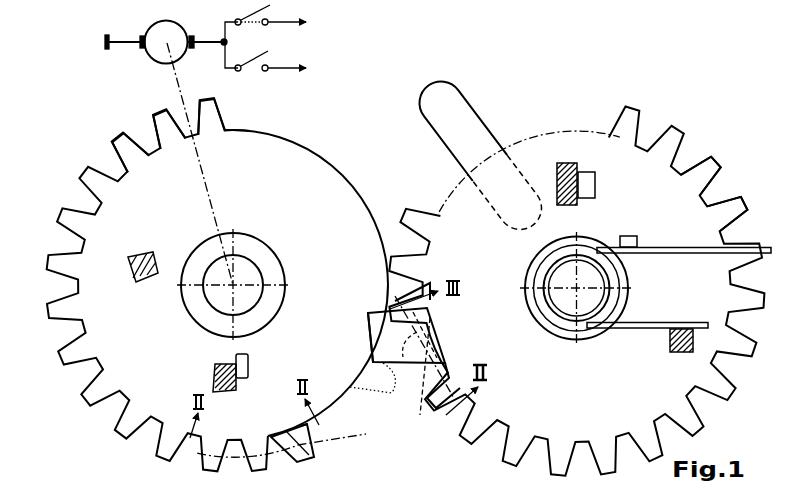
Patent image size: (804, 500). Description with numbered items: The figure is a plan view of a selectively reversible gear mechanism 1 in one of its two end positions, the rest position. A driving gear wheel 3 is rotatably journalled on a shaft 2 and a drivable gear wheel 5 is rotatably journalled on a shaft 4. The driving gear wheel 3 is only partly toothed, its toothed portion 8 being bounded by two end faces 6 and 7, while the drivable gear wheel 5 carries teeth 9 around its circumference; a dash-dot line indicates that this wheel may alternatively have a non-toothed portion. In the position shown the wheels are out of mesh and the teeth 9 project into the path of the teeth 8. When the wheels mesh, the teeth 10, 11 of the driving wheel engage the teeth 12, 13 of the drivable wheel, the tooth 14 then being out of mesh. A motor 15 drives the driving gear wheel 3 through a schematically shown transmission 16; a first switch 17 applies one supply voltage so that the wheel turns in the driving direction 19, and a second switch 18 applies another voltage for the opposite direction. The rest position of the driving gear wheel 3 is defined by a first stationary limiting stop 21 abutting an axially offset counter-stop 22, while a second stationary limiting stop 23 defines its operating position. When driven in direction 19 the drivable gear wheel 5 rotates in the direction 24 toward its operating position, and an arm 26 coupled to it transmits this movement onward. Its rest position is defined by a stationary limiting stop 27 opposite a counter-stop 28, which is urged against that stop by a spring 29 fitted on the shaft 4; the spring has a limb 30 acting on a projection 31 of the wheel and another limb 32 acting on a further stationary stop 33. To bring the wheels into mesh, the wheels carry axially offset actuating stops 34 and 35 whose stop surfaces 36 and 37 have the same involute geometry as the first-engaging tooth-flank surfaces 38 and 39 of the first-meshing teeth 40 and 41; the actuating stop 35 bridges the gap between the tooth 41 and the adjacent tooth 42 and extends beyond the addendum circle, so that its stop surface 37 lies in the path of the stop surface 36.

The gear mechanism 1 is at (384, 166).
The shaft 2 is at (253, 268).
The driving gear wheel 3 is at (312, 147).
The shaft 4 is at (560, 267).
The drivable gear wheel 5 is at (547, 139).
The end face 6 is at (316, 422).
The end face 7 is at (236, 124).
The toothed portion 8 is at (58, 344).
The teeth 9 is at (684, 119).
The meshing tooth 10 is at (165, 112).
The meshing tooth 11 is at (212, 102).
The meshing tooth 12 is at (734, 203).
The meshing tooth 13 is at (711, 174).
The tooth 14 is at (121, 133).
The motor 15 is at (154, 30).
The transmission 16 is at (204, 164).
The first switch 17 is at (262, 26).
The second switch 18 is at (262, 56).
The driving direction 19 is at (168, 386).
The first stationary limiting stop 21 is at (214, 367).
The counter-stop 22 is at (248, 361).
The second stationary limiting stop 23 is at (144, 256).
The driving direction 24 is at (555, 410).
The arm 26 is at (441, 94).
The stationary limiting stop 27 is at (572, 163).
The counter-stop 28 is at (594, 178).
The spring 29 is at (540, 297).
The limb 30 is at (673, 247).
The projection 31 is at (628, 235).
The limb 32 is at (630, 322).
The further stationary stop 33 is at (669, 342).
The actuating stop 34 is at (300, 448).
The actuating stop 35 is at (383, 349).
The stop surface 36 is at (316, 450).
The stop surface 37 is at (396, 384).
The tooth-flank surface 38 is at (281, 441).
The tooth-flank surface 39 is at (435, 374).
The first-meshing tooth 40 is at (292, 428).
The first-meshing tooth 41 is at (432, 329).
The adjacent tooth 42 is at (397, 295).